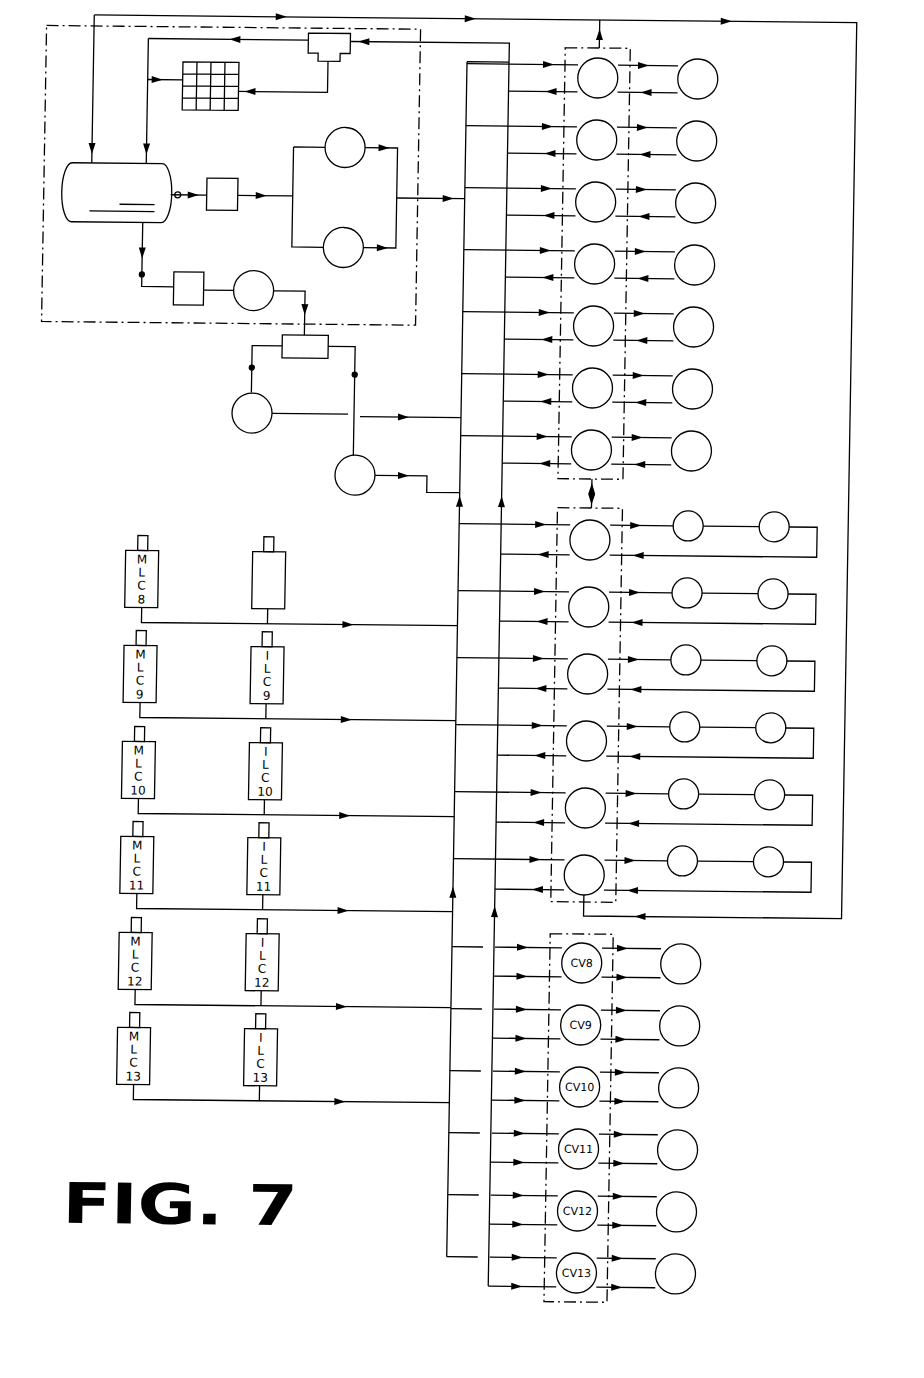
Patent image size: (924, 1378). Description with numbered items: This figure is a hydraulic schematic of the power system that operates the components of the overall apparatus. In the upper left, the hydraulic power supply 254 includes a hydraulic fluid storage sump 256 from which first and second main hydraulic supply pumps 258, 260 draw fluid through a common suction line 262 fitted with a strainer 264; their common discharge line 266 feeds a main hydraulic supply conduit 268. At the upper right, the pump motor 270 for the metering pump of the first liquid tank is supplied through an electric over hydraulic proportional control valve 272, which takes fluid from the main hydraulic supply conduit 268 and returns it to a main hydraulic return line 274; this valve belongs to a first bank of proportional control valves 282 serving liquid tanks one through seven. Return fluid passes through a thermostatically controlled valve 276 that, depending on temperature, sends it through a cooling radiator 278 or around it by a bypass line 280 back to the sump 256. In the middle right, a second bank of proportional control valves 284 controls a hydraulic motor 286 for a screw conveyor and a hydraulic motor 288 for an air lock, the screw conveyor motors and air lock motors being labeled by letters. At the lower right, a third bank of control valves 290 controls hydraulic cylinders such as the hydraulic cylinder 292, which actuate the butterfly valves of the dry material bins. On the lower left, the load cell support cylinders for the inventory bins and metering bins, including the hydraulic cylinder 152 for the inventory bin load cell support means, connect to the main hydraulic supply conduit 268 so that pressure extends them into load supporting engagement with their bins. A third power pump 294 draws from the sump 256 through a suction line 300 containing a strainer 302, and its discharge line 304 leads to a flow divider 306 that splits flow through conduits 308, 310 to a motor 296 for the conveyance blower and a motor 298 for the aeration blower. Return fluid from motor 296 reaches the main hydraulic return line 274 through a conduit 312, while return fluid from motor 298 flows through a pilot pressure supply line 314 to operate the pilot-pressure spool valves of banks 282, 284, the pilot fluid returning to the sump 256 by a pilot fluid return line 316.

The hydraulic cylinder 152 is at (296, 592).
The hydraulic power supply 254 is at (95, 322).
The hydraulic fluid storage sump 256 is at (140, 192).
The first main hydraulic supply pump 258 is at (340, 165).
The second main hydraulic supply pump 260 is at (361, 214).
The common suction line 262 is at (268, 191).
The strainer 264 is at (245, 158).
The common discharge line 266 is at (408, 196).
The main hydraulic supply conduit 268 is at (467, 278).
The pump motor 270 is at (712, 87).
The proportional control valve 272 is at (612, 58).
The main hydraulic return line 274 is at (490, 40).
The thermostatically controlled valve 276 is at (346, 57).
The cooling radiator 278 is at (232, 108).
The bypass line 280 is at (231, 40).
The first bank of proportional control valves 282 is at (626, 43).
The second bank of proportional control valves 284 is at (638, 508).
The hydraulic motor 286 is at (702, 534).
The hydraulic motor 288 is at (785, 534).
The third bank of control valves 290 is at (642, 940).
The hydraulic cylinder 292 is at (712, 973).
The third power pump 294 is at (264, 268).
The motor 296 is at (256, 431).
The motor 298 is at (357, 492).
The suction line 300 is at (146, 274).
The strainer 302 is at (192, 270).
The discharge line 304 is at (312, 299).
The flow divider 306 is at (294, 356).
The conduit 308 is at (258, 365).
The conduit 310 is at (362, 371).
The conduit 312 is at (377, 412).
The pilot pressure supply line 314 is at (435, 470).
The pilot fluid return line 316 is at (472, 19).